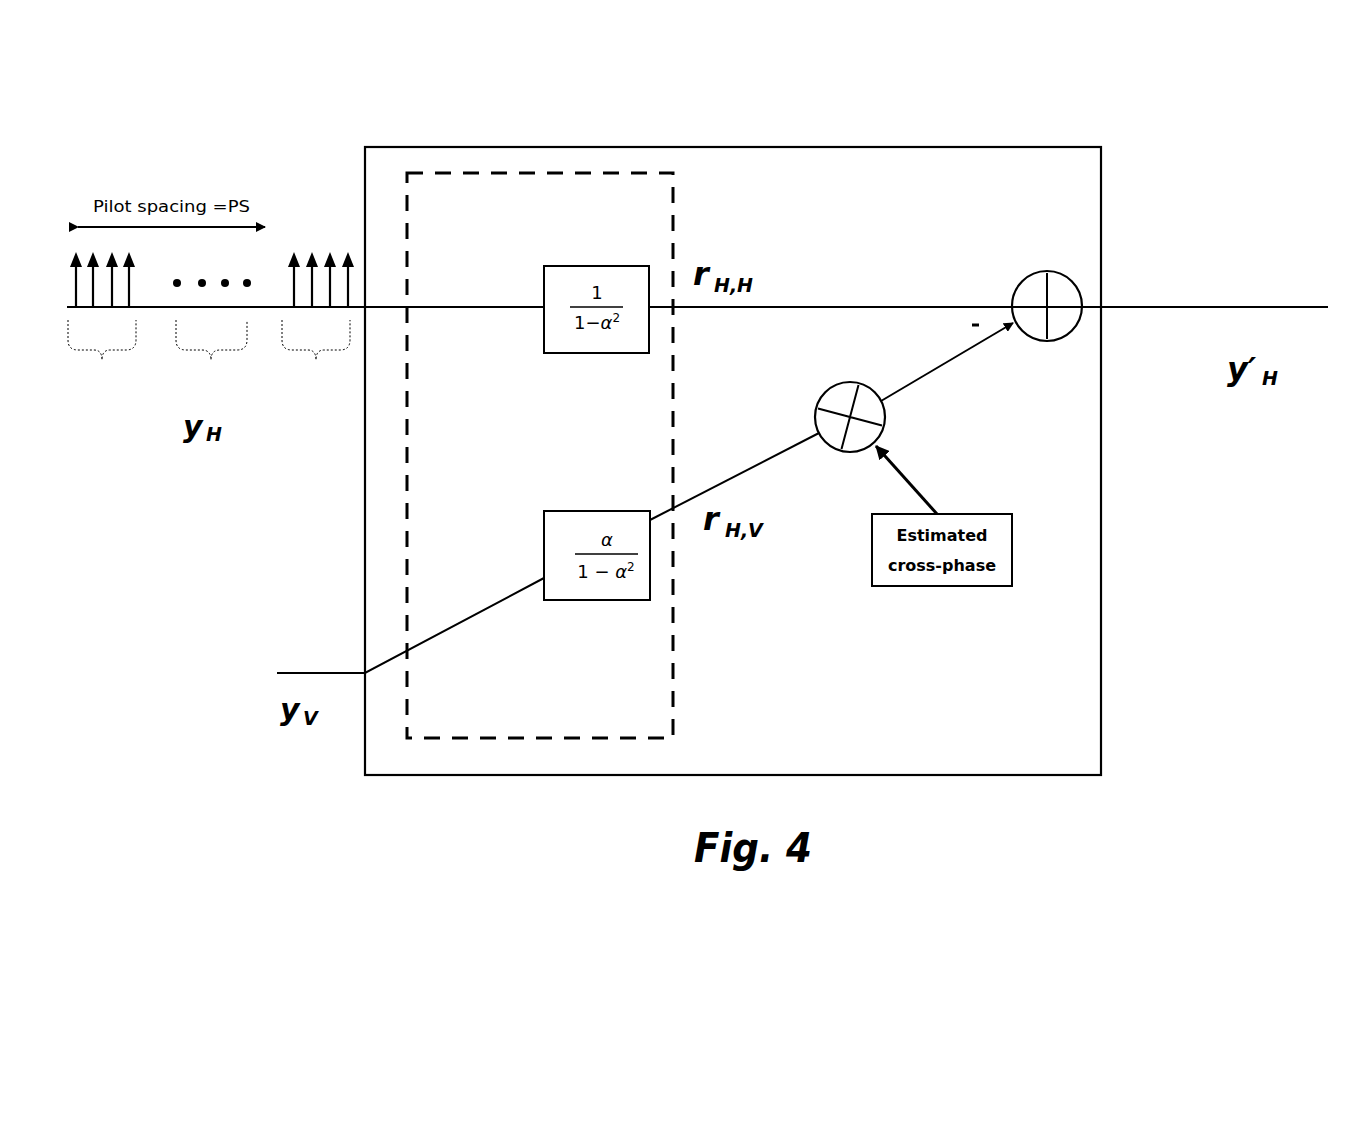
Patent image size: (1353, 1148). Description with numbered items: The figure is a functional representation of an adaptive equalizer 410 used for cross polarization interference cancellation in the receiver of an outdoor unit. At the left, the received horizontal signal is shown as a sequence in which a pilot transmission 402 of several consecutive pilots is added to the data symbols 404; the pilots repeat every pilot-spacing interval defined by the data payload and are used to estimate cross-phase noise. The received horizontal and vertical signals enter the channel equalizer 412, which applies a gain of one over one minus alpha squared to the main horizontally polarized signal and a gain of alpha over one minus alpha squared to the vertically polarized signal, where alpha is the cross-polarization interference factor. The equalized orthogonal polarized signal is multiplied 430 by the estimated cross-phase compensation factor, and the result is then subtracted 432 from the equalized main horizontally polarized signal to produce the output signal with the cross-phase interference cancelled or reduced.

The pilot transmission 402 is at (211, 324).
The data symbols 404 is at (212, 327).
The adaptive equalizer 410 is at (364, 190).
The channel equalizer 412 is at (674, 218).
The multiplier 430 is at (828, 391).
The subtractor 432 is at (1022, 281).